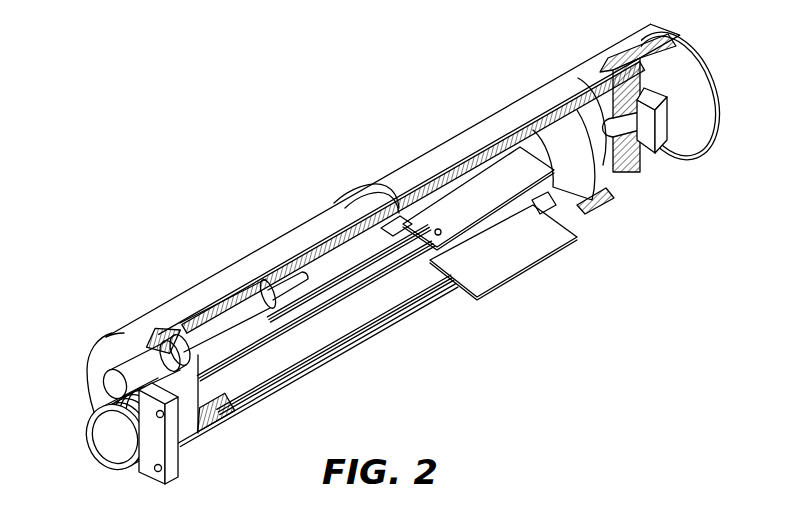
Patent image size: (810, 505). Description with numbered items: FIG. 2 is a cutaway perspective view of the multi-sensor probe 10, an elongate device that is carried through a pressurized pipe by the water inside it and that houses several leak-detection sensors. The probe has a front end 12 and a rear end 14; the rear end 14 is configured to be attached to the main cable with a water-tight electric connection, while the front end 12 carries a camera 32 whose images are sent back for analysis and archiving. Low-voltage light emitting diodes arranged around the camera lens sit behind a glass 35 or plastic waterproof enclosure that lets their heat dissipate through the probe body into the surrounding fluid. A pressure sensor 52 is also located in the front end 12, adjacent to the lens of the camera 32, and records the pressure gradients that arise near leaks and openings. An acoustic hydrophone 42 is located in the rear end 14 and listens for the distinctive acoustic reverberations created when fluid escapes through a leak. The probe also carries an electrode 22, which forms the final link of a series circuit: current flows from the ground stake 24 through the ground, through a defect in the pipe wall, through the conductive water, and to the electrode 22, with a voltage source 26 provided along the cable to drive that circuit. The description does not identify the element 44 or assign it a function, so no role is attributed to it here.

The multi-sensor probe 10 is at (266, 197).
The front end 12 is at (617, 62).
The rear end 14 is at (143, 323).
The electrode 22 is at (368, 193).
The ground stake 24 is at (468, 198).
The voltage source 26 is at (503, 252).
The camera 32 is at (588, 183).
The glass 35 is at (714, 114).
The acoustic hydrophone 42 is at (123, 358).
The flange plate 44 is at (158, 433).
The pressure sensor 52 is at (672, 132).